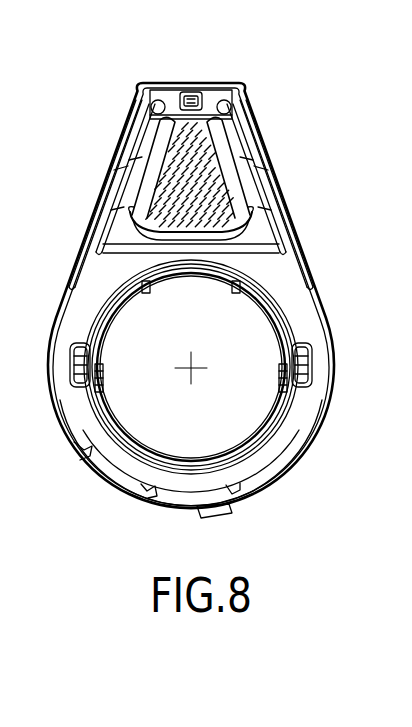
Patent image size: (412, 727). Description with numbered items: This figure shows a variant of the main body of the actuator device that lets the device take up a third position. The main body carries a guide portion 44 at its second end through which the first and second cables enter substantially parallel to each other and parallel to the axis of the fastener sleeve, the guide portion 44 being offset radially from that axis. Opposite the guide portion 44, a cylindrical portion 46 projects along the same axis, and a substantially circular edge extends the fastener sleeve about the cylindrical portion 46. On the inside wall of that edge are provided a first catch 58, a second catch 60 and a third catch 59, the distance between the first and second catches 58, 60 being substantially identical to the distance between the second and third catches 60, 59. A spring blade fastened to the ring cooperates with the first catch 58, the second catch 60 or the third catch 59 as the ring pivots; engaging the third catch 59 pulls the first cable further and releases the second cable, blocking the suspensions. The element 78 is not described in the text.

The guide portion 44 is at (257, 96).
The cylindrical portion 46 is at (276, 316).
The housing ring wall 78 is at (338, 412).
The second catch 60 is at (76, 452).
The first catch 58 is at (147, 499).
The third catch 59 is at (241, 497).